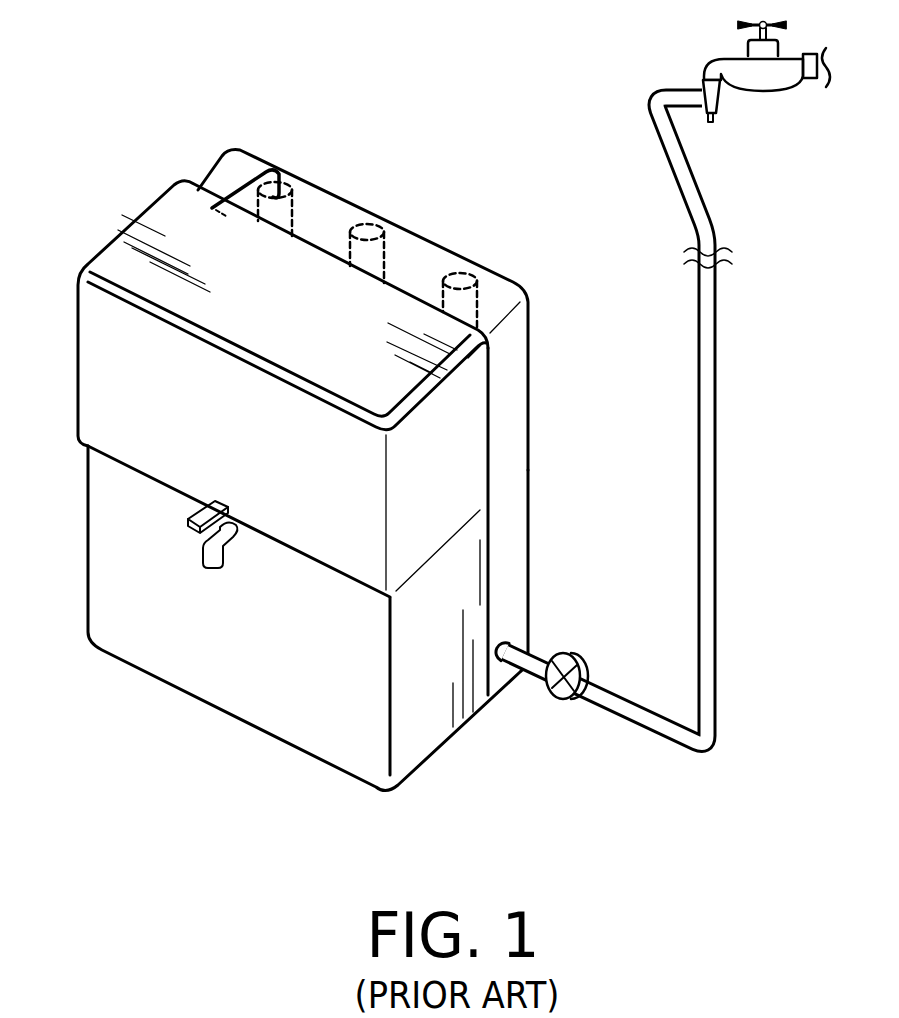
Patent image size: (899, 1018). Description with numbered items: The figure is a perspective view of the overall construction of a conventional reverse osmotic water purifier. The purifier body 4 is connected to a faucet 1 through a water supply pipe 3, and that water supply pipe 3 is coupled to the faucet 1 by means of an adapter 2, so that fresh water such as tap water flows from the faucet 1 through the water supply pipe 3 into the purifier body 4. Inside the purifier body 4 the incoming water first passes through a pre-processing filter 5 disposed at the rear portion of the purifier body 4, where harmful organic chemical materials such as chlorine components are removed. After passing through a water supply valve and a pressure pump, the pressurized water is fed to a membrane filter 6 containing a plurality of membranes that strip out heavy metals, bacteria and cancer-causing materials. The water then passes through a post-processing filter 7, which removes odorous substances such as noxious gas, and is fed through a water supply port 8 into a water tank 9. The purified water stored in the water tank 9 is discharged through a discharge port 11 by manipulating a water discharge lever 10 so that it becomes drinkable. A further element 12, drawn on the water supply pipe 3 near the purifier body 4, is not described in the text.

The faucet 1 is at (716, 66).
The adapter 2 is at (721, 97).
The water supply pipe 3 is at (708, 413).
The purifier body 4 is at (462, 726).
The pre-processing filter 5 is at (463, 270).
The membrane filter 6 is at (370, 213).
The post-processing filter 7 is at (293, 170).
The water supply port 8 is at (216, 207).
The water tank 9 is at (157, 383).
The water discharge lever 10 is at (187, 518).
The discharge port 11 is at (201, 566).
The valve 12 is at (558, 663).